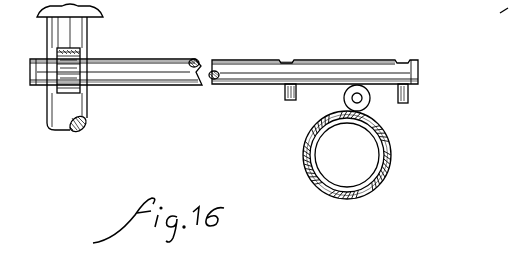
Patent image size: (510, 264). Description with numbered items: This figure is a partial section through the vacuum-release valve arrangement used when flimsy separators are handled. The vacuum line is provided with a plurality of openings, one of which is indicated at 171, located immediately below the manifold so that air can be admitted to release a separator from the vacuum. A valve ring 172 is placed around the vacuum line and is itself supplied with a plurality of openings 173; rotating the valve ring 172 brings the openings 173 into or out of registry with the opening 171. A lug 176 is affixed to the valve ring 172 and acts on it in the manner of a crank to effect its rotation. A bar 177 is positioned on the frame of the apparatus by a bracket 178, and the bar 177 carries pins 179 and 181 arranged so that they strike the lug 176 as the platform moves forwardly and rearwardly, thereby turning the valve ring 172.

The opening 171 is at (316, 168).
The valve ring 172 is at (388, 172).
The openings 173 is at (392, 143).
The lug 176 is at (358, 99).
The bar 177 is at (232, 72).
The bracket 178 is at (79, 51).
The pin 179 is at (410, 92).
The pin 181 is at (283, 97).